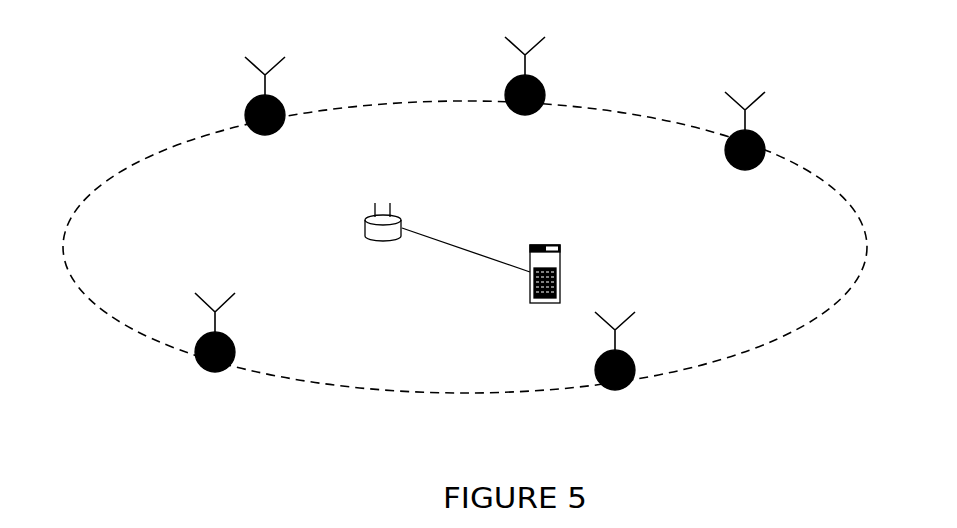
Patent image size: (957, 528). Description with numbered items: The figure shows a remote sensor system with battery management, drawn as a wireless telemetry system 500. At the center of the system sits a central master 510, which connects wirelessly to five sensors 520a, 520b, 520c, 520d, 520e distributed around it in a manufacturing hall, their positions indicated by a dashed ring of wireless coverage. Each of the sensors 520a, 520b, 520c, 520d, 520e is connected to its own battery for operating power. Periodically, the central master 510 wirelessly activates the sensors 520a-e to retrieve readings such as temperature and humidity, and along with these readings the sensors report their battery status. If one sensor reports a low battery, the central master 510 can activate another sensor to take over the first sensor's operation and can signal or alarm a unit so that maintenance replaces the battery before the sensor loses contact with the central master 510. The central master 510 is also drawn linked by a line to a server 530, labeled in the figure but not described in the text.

The wireless telemetry system 500 is at (136, 95).
The central master 510 is at (394, 213).
The sensor 520a is at (270, 135).
The sensor 520b is at (530, 115).
The sensor 520c is at (746, 170).
The sensor 520d is at (620, 390).
The sensor 520e is at (212, 372).
The server 530 is at (525, 310).